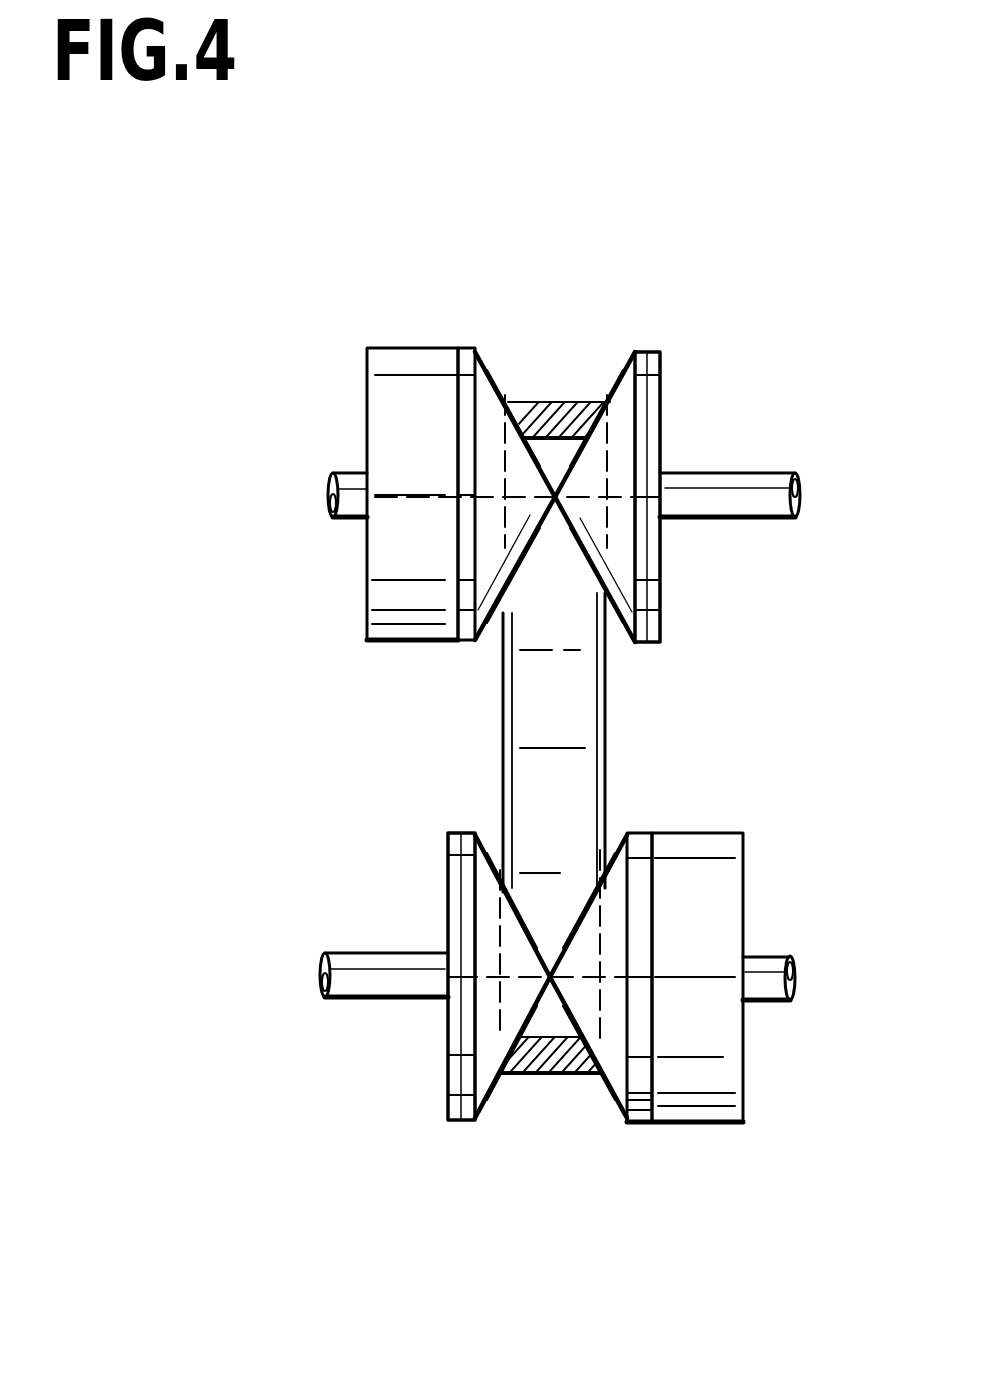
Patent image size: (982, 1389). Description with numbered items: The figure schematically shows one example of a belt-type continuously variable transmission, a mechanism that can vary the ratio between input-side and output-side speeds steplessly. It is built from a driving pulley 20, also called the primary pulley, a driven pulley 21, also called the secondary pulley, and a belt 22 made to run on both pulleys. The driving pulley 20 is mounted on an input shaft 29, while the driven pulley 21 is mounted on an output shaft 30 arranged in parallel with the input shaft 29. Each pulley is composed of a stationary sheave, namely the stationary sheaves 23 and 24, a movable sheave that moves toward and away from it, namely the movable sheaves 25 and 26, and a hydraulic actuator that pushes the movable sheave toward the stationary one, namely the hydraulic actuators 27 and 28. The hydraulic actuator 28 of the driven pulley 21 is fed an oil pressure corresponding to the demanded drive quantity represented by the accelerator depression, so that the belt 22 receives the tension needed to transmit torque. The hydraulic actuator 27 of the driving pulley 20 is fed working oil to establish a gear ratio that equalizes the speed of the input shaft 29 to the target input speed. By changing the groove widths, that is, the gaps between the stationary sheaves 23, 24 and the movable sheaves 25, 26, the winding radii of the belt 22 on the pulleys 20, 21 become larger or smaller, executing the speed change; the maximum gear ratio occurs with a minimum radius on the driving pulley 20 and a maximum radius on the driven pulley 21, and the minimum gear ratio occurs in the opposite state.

The driving pulley 20 is at (652, 318).
The driven pulley 21 is at (438, 1156).
The belt 22 is at (607, 712).
The stationary sheave 23 is at (643, 392).
The stationary sheave 24 is at (463, 876).
The movable sheave 25 is at (473, 350).
The movable sheave 26 is at (630, 1123).
The hydraulic actuator 27 is at (386, 390).
The hydraulic actuator 28 is at (722, 882).
The input shaft 29 is at (765, 518).
The output shaft 30 is at (758, 1003).